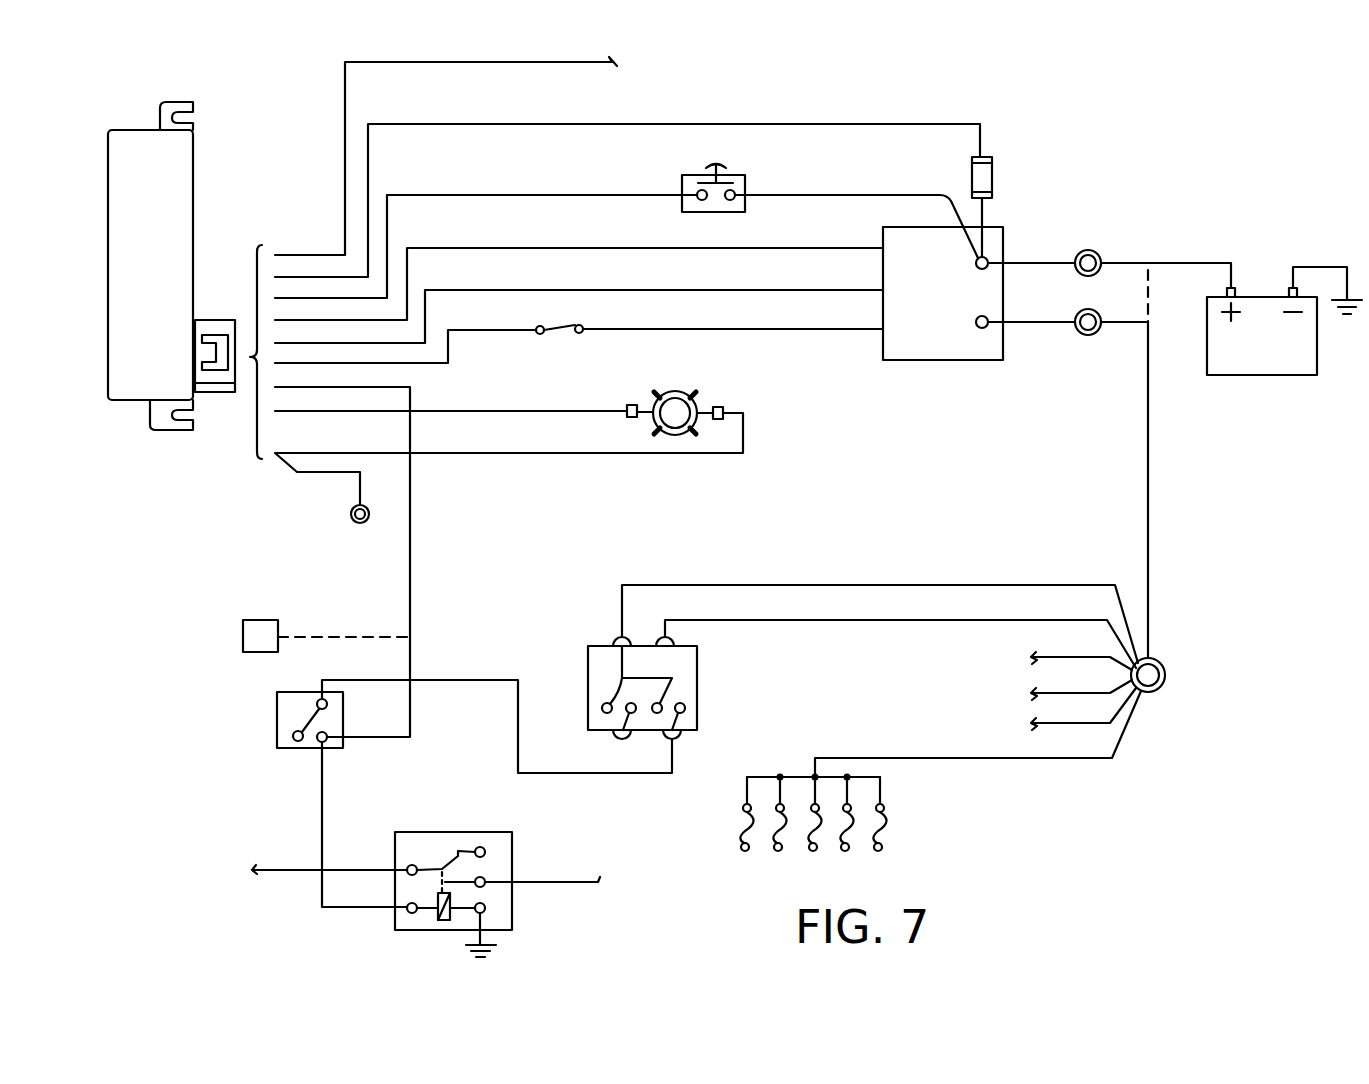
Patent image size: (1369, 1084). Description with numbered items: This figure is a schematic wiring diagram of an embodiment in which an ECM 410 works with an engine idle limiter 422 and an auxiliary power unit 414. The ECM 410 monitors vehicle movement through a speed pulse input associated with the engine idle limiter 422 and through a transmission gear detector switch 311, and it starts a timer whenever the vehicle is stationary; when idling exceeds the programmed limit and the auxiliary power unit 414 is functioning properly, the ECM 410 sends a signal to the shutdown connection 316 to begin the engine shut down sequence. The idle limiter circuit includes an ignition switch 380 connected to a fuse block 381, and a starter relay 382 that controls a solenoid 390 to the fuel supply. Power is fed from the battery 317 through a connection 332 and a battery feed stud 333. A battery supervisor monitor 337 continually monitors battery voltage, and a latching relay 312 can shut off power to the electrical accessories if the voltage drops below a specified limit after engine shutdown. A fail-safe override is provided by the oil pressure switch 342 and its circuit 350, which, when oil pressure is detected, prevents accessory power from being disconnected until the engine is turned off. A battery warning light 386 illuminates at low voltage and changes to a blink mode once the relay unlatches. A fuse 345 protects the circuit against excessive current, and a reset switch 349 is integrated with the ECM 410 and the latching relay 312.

The ECM 410 is at (107, 128).
The shutdown connection 316 is at (530, 63).
The reset switch 349 is at (748, 180).
The fuse 345 is at (993, 172).
The battery supervisor monitor 337 is at (1092, 250).
The latching relay 312 is at (935, 360).
The auxiliary power unit 414 is at (1085, 336).
The battery 317 is at (1262, 375).
The connection 332 is at (1150, 483).
The battery feed stud 333 is at (1165, 673).
The oil pressure switch circuit 350 is at (493, 333).
The oil pressure switch 342 is at (558, 333).
The battery warning light 386 is at (695, 393).
The engine idle limiter 422 is at (255, 620).
The transmission gear detector switch 311 is at (277, 718).
The ignition switch 380 is at (600, 648).
The starter relay 382 is at (443, 832).
The solenoid 390 is at (558, 882).
The fuse block 381 is at (892, 829).